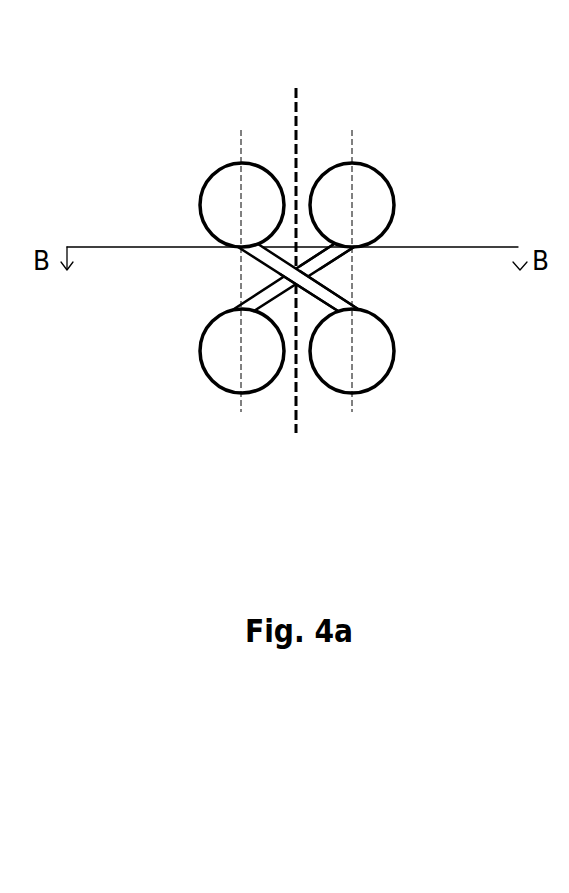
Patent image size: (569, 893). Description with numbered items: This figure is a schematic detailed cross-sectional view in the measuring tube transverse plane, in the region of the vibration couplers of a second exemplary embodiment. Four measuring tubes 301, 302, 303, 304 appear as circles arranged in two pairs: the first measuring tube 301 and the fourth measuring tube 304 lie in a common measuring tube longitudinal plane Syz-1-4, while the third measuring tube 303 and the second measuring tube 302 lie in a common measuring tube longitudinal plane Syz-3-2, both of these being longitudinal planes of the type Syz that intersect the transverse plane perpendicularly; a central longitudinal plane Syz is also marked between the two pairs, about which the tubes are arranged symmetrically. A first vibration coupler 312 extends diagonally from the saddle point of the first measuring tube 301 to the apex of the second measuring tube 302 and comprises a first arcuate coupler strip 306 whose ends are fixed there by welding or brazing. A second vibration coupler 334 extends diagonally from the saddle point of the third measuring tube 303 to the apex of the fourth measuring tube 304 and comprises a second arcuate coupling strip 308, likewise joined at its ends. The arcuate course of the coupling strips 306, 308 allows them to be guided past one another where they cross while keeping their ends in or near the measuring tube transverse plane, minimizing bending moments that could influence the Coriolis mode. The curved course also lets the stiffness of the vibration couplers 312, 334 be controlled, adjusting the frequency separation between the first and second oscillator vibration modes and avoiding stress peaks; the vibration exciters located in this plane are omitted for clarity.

The first measuring tube 301 is at (223, 168).
The second measuring tube 302 is at (383, 380).
The third measuring tube 303 is at (381, 173).
The fourth measuring tube 304 is at (210, 380).
The first arcuate coupler strip 306 is at (313, 290).
The second arcuate coupling strip 308 is at (321, 265).
The first vibration coupler 312 is at (243, 259).
The second vibration coupler 334 is at (335, 261).
The measuring tube longitudinal plane Syz is at (295, 98).
The common measuring tube longitudinal plane of the first and fourth measuring tubes Syz-1-4 is at (240, 405).
The common measuring tube longitudinal plane of the third and second measuring tubes Syz-3-2 is at (354, 405).